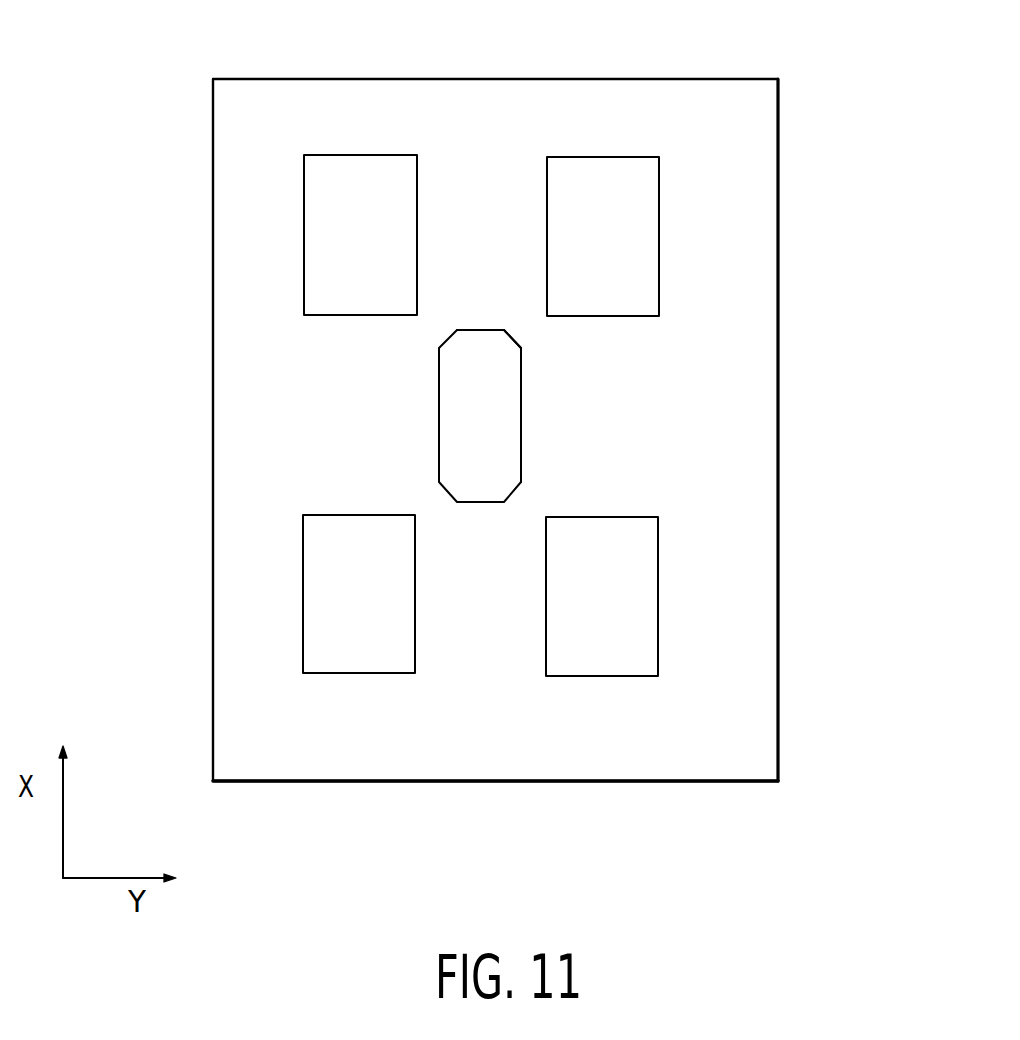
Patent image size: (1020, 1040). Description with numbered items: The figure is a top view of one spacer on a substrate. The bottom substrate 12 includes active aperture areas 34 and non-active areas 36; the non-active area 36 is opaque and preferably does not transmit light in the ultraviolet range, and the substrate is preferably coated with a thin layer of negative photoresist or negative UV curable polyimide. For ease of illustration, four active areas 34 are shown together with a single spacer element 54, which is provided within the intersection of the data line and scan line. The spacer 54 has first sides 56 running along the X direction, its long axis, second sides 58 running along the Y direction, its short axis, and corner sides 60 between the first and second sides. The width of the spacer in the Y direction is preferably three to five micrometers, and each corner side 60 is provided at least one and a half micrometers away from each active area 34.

The bottom substrate 12 is at (778, 326).
The active aperture area 34 is at (603, 173).
The non-active area 36 is at (723, 450).
The spacer element 54 is at (439, 410).
The first side 56 is at (521, 413).
The second side 58 is at (480, 330).
The corner side 60 is at (513, 338).